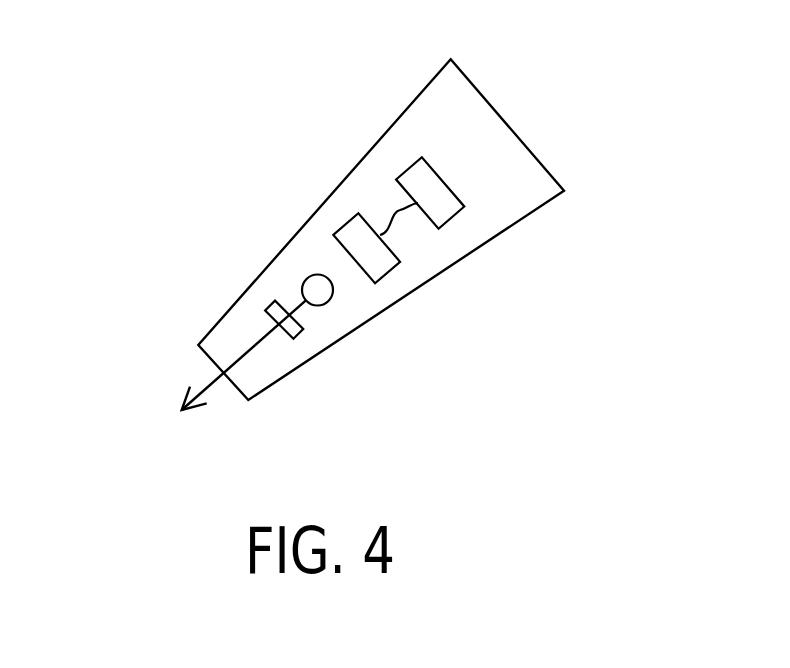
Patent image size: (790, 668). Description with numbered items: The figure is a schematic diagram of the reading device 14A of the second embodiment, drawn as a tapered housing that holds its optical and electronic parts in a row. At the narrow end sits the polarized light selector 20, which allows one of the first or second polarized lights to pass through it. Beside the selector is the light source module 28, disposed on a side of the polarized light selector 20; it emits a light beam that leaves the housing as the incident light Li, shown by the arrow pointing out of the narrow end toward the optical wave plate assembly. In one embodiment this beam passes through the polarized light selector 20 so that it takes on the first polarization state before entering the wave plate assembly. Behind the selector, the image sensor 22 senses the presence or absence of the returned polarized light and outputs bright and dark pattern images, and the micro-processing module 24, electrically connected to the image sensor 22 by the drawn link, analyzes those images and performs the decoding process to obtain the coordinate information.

The reading device 14A is at (147, 90).
The polarized light selector 20 is at (298, 333).
The image sensor 22 is at (380, 260).
The micro-processing module 24 is at (443, 207).
The light source module 28 is at (322, 295).
The incident light Li is at (213, 383).